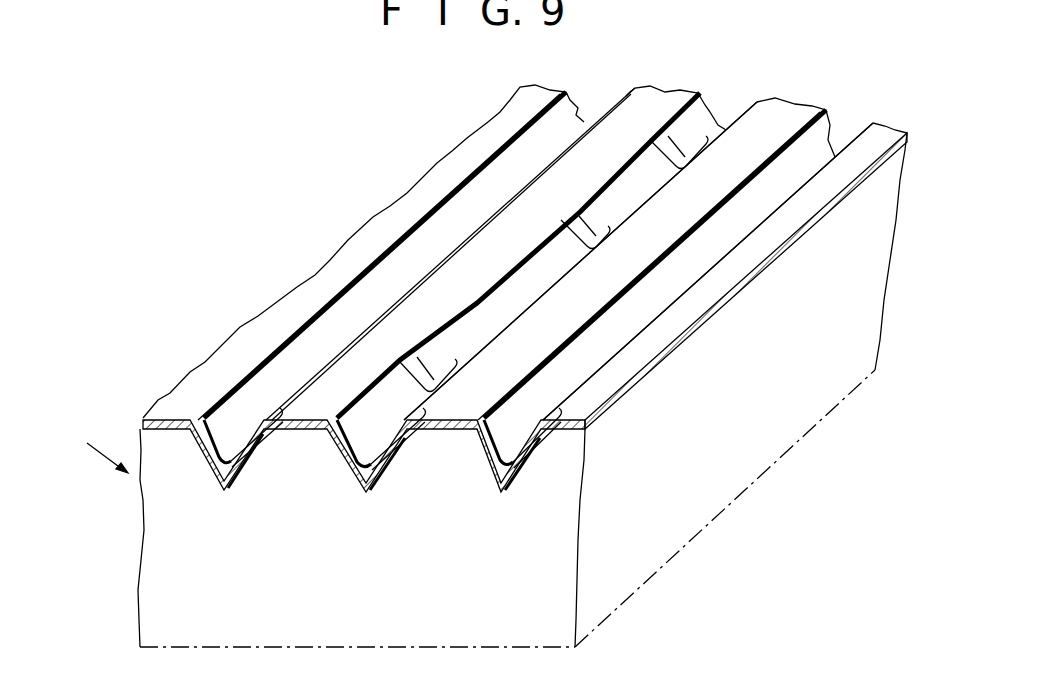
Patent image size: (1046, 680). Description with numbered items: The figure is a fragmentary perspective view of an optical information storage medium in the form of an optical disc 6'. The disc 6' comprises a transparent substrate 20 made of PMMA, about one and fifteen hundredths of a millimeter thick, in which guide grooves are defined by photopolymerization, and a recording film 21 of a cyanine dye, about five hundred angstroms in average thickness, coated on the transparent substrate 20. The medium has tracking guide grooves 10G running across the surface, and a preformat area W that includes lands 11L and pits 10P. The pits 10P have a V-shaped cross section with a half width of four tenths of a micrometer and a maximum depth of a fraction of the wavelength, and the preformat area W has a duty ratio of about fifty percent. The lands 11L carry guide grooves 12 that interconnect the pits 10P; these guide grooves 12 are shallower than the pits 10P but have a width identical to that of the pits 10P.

The transparent substrate 20 is at (148, 554).
The tracking guide grooves 10G is at (263, 382).
The lands 11L is at (648, 197).
The guide grooves 12 is at (474, 318).
The preformat area W is at (486, 212).
The pits 10P is at (700, 137).
The recording film 21 is at (493, 490).
The optical disc 6' is at (95, 450).